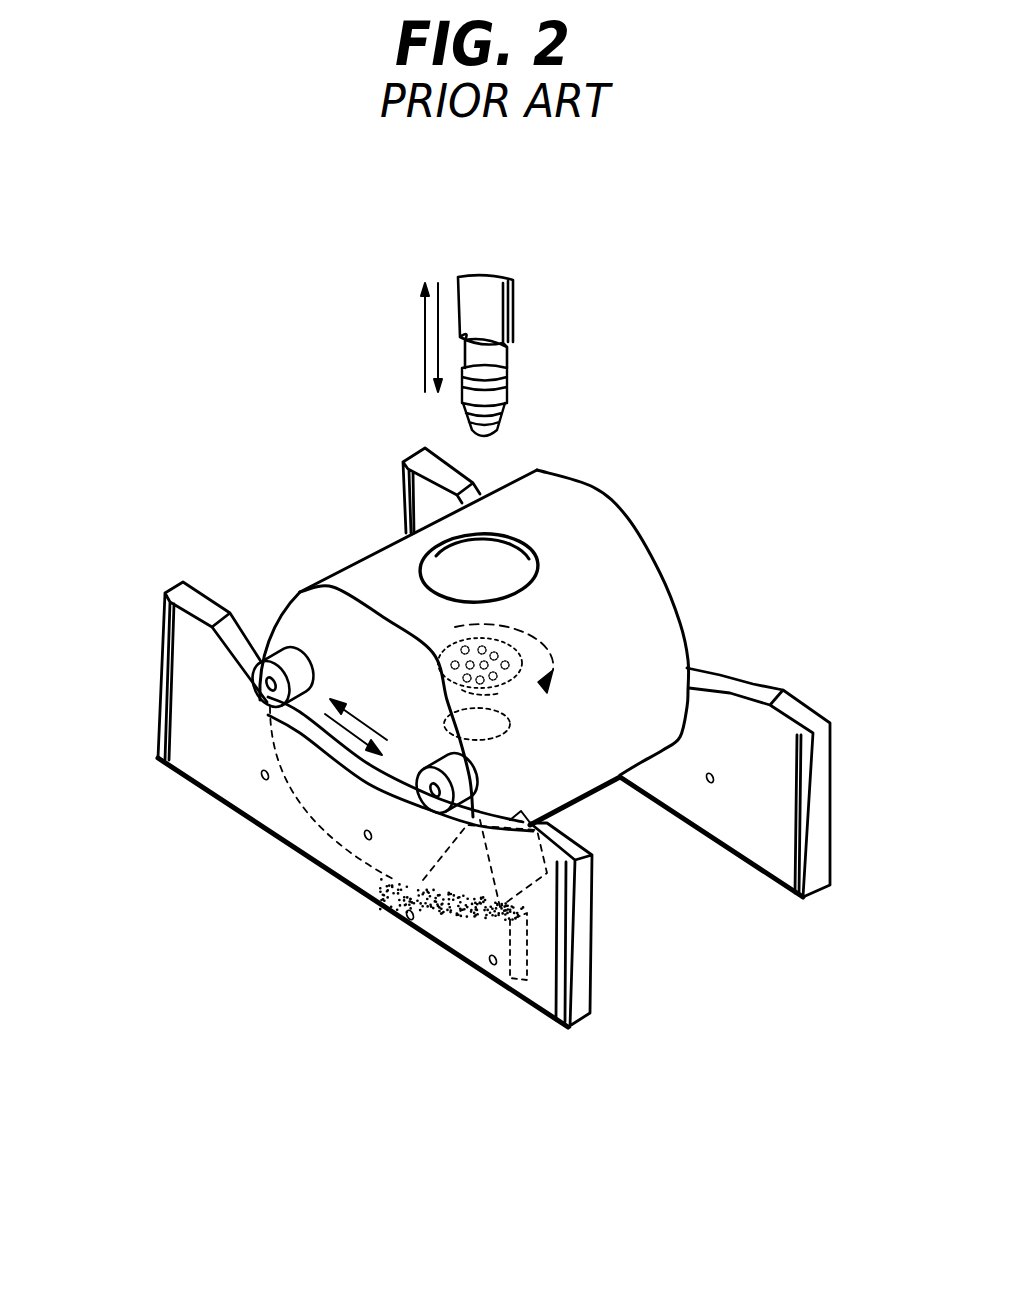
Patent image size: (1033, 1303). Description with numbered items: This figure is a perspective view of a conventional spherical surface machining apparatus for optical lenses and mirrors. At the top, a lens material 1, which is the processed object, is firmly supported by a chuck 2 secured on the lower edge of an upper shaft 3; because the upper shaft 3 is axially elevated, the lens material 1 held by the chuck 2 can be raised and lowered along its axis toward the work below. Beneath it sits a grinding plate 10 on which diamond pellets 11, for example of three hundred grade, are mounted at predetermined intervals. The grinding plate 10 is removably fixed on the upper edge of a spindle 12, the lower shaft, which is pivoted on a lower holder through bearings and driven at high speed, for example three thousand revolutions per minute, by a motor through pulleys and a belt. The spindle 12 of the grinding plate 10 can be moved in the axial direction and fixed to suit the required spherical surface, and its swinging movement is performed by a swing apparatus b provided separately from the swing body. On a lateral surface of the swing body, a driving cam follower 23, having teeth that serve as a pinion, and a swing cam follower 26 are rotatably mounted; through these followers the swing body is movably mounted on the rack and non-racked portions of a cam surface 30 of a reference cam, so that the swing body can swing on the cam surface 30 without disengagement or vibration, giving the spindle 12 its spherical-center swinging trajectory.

The lens material 1 is at (497, 433).
The chuck 2 is at (510, 388).
The upper shaft 3 is at (497, 313).
The grinding plate 10 is at (440, 674).
The diamond pellets 11 is at (490, 720).
The spindle 12 is at (508, 692).
The driving cam follower 23 is at (195, 640).
The swing cam follower 26 is at (265, 703).
The cam surface 30 is at (330, 747).
The swing apparatus b is at (477, 950).